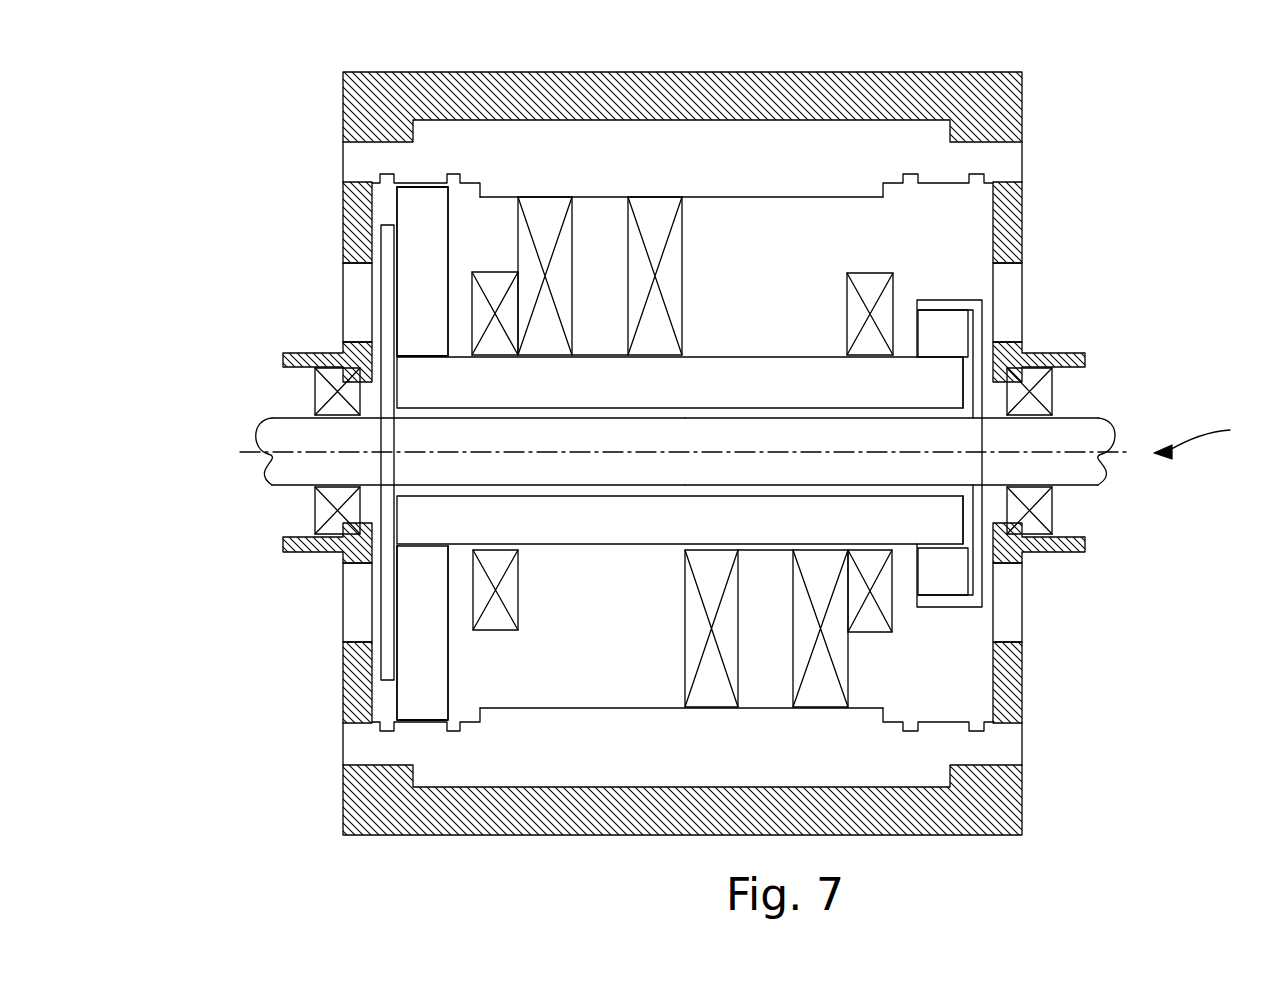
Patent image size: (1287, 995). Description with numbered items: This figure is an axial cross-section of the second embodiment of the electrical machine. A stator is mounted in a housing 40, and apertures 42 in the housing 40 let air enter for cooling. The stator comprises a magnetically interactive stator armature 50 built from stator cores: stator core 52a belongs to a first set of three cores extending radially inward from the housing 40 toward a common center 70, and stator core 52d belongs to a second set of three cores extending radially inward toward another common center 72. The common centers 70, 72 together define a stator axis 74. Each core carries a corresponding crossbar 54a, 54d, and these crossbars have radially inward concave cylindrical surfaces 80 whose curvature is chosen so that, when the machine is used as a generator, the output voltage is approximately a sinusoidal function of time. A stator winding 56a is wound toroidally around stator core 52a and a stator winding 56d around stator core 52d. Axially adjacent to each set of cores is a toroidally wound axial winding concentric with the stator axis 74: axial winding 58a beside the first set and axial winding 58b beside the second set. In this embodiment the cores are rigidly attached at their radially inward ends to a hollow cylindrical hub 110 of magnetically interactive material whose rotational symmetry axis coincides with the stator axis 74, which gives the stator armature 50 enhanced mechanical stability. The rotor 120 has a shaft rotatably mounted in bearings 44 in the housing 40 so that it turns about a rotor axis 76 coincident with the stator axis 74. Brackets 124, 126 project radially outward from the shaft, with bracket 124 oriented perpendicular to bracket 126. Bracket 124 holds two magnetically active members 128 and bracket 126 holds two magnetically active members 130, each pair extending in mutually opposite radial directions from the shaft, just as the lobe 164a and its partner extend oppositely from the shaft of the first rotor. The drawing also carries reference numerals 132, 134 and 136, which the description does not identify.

The housing 40 is at (1013, 120).
The apertures 42 is at (360, 297).
The bearings 44 is at (322, 390).
The stator armature 50 is at (706, 203).
The stator core 52a is at (580, 298).
The stator core 52d is at (740, 646).
The crossbar 54a is at (711, 163).
The crossbar 54d is at (723, 761).
The stator winding 56a is at (547, 205).
The stator winding 56d is at (688, 605).
The axial winding 58a is at (486, 282).
The axial winding 58b is at (855, 282).
The common center 70 is at (552, 455).
The common center 72 is at (773, 455).
The stator axis 74 is at (685, 435).
The rotor axis 76 is at (430, 452).
The concave cylindrical surfaces 80 is at (420, 217).
The hub 110 is at (698, 398).
The rotor 120 is at (1184, 438).
The bracket 124 is at (387, 320).
The bracket 126 is at (943, 300).
The magnetically active members 128 is at (398, 290).
The magnetically active members 130 is at (922, 348).
The rotor end 132 is at (797, 360).
The flange 134 is at (420, 717).
The flange 136 is at (423, 546).
The lobe 164a is at (445, 348).